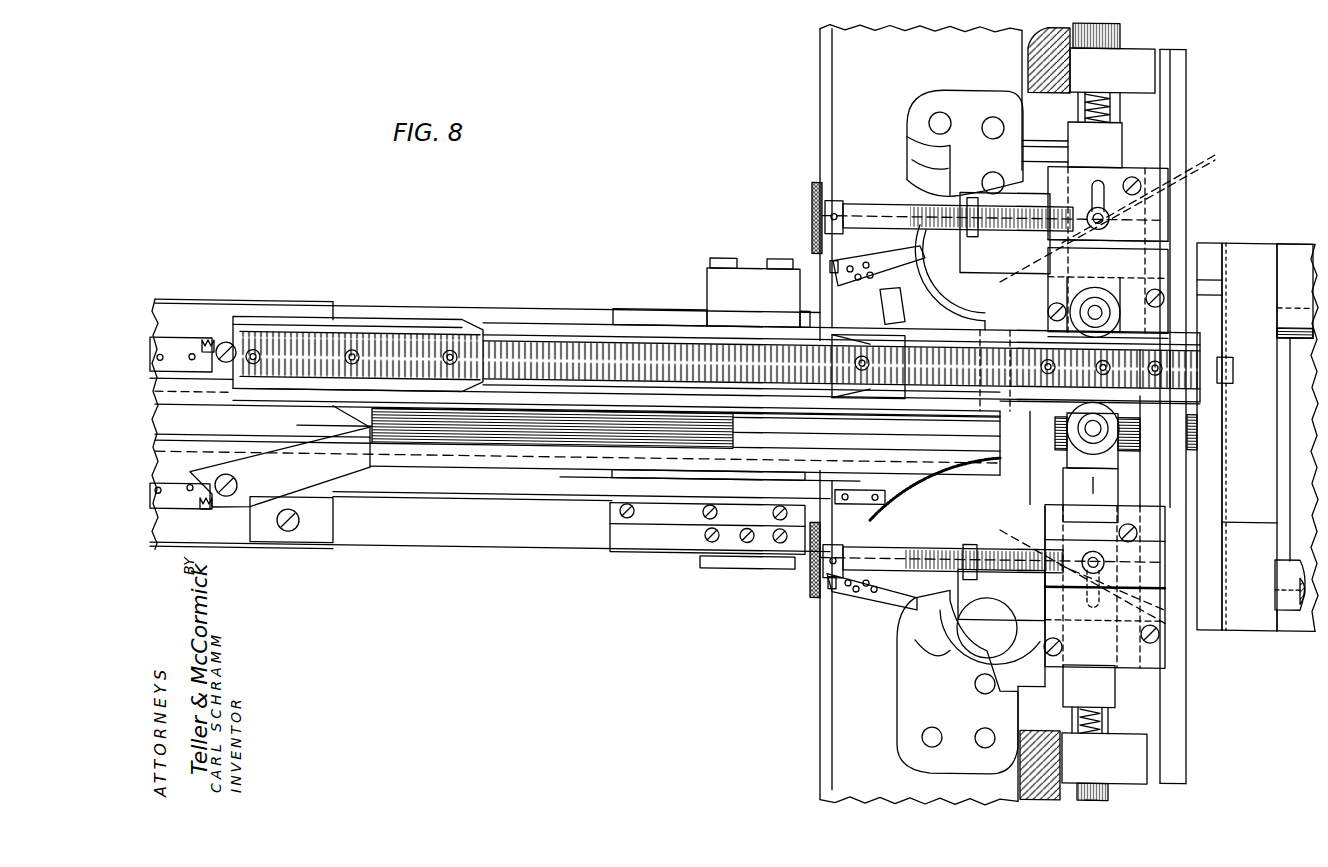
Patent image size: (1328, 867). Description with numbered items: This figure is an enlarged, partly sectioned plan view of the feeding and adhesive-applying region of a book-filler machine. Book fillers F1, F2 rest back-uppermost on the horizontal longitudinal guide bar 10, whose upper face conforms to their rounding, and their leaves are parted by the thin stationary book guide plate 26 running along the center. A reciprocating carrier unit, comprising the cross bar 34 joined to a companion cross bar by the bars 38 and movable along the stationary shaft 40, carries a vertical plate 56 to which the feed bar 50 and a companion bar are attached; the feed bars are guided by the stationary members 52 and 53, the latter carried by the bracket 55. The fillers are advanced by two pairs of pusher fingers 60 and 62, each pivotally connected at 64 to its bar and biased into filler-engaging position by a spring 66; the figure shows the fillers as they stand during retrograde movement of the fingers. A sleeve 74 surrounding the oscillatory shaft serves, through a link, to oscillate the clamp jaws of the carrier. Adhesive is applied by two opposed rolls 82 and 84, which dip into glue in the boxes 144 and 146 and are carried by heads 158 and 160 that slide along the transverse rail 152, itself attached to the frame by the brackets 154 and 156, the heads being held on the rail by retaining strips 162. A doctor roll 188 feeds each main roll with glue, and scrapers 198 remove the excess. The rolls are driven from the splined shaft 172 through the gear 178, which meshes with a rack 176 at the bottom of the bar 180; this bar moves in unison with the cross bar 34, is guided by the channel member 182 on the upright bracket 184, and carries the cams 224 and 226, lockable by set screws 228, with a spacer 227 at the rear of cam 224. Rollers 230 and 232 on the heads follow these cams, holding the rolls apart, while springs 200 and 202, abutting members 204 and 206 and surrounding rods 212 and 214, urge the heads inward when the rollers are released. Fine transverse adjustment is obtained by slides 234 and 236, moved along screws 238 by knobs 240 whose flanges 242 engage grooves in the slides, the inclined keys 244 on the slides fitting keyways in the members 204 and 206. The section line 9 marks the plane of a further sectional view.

The guide bar 10 is at (180, 424).
The book guide plate 26 is at (297, 430).
The cross bar 34 is at (1245, 250).
The bars 38 is at (1310, 625).
The stationary shaft 40 is at (1298, 538).
The feed bar 50 is at (448, 503).
The stationary member 52 is at (628, 310).
The stationary member 53 is at (612, 552).
The bracket 55 is at (714, 564).
The vertical plate 56 is at (1207, 242).
The pusher fingers 60 is at (352, 415).
The pusher fingers 62 is at (1020, 418).
The pivot 64 is at (228, 347).
The spring 66 is at (208, 350).
The sleeve 74 is at (1295, 252).
The adhesive roll 82 is at (882, 312).
The adhesive roll 84 is at (915, 486).
The adhesive box 144 is at (830, 73).
The adhesive box 146 is at (828, 670).
The rail 152 is at (1182, 726).
The bracket 154 is at (1165, 60).
The bracket 156 is at (1140, 786).
The head 158 is at (1163, 208).
The head 160 is at (1155, 655).
The retaining strips 162 is at (1170, 175).
The shaft 172 is at (1120, 100).
The rack 176 is at (512, 355).
The gear 178 is at (972, 322).
The bar 180 is at (490, 340).
The channel member 182 is at (422, 322).
The upright bracket 184 is at (708, 273).
The doctor roll 188 is at (905, 188).
The scraper 198 is at (873, 266).
The spring 200 is at (1115, 104).
The spring 202 is at (1075, 714).
The member 204 is at (1115, 140).
The member 206 is at (1115, 690).
The rod 212 is at (1097, 34).
The rod 214 is at (1116, 790).
The cam 224 is at (835, 338).
The cam 226 is at (350, 337).
The spacer 227 is at (1175, 347).
The set screw 228 is at (256, 355).
The roller 230 is at (1085, 290).
The roller 232 is at (1095, 446).
The slide 234 is at (1006, 190).
The slide 236 is at (1038, 630).
The screw 238 is at (992, 225).
The knob 240 is at (812, 193).
The flange 242 is at (972, 193).
The inclined key 244 is at (1020, 280).
The section line 9 is at (1063, 19).
The book filler F1 is at (525, 436).
The book filler F2 is at (1200, 438).